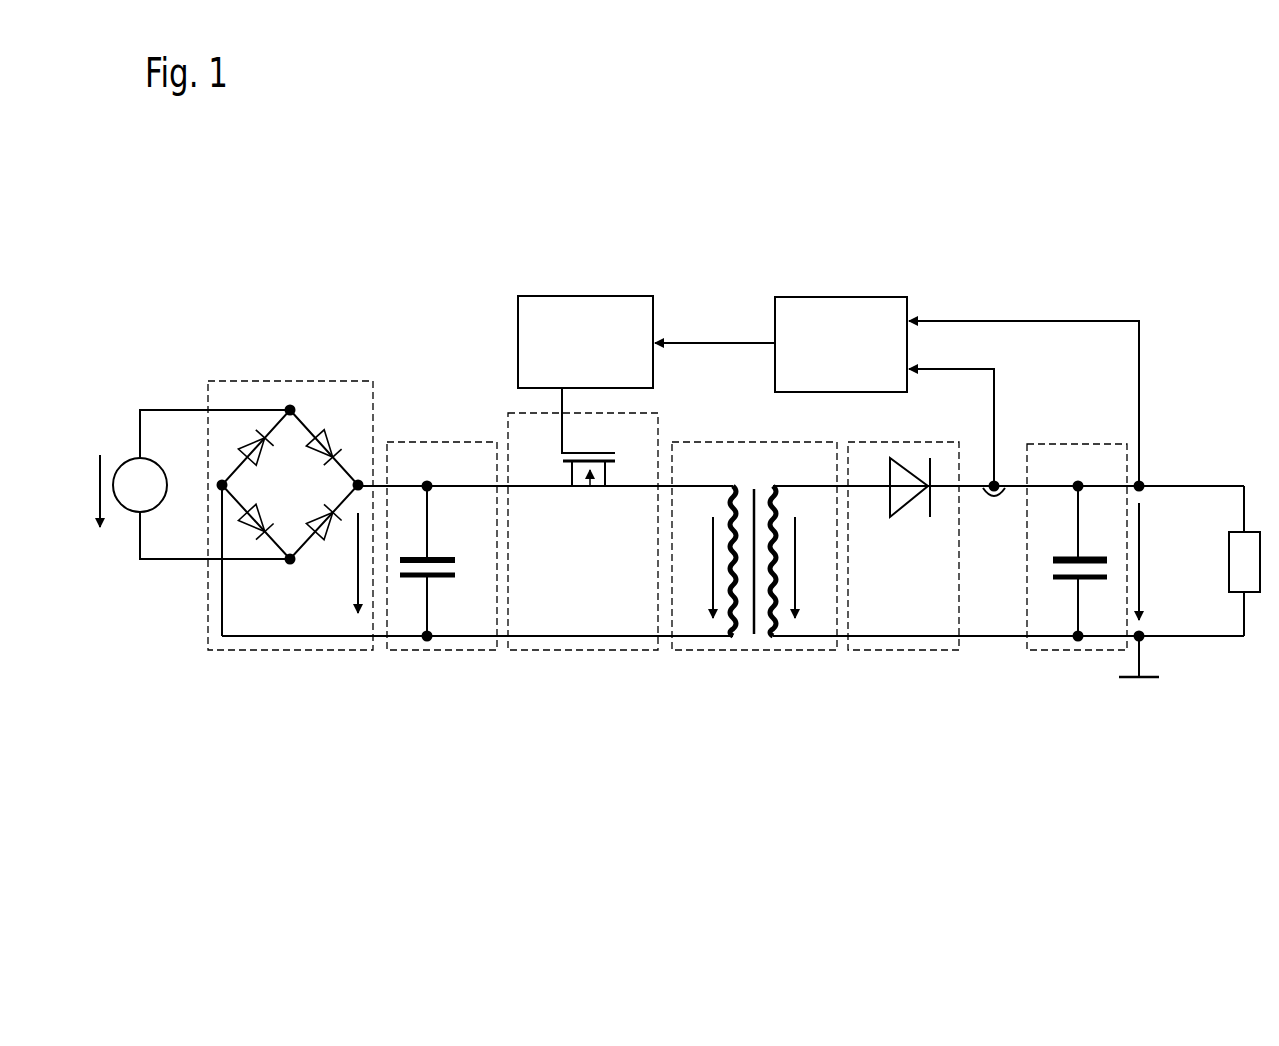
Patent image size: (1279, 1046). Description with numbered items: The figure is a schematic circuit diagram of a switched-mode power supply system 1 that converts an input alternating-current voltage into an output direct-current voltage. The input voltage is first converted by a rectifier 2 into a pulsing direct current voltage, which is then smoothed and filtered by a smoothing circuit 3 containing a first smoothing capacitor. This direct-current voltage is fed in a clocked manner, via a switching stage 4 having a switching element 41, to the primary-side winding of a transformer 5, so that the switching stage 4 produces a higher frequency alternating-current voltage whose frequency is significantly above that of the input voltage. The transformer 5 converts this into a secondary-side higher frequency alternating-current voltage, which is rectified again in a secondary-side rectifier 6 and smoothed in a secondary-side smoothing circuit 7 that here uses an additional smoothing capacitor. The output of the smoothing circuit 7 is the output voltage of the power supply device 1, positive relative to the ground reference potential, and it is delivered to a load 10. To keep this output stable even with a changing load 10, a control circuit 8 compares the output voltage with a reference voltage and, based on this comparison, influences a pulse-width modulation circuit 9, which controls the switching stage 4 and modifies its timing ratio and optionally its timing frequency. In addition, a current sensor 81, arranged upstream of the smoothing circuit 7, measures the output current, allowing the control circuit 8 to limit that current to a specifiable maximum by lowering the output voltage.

The switched-mode power supply system 1 is at (222, 290).
The rectifier 2 is at (315, 651).
The smoothing circuit 3 is at (413, 651).
The switching stage 4 is at (537, 651).
The switching element 41 is at (587, 462).
The transformer 5 is at (728, 651).
The secondary-side rectifier 6 is at (875, 651).
The secondary-side smoothing circuit 7 is at (1066, 652).
The control circuit 8 is at (837, 297).
The current sensor 81 is at (998, 485).
The pulse-width modulation circuit 9 is at (580, 295).
The load 10 is at (1248, 593).